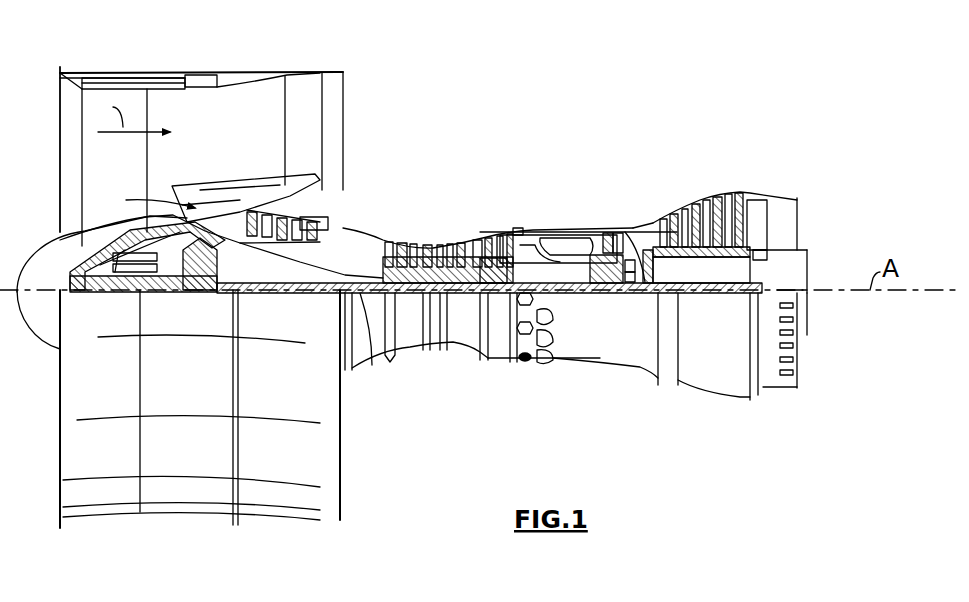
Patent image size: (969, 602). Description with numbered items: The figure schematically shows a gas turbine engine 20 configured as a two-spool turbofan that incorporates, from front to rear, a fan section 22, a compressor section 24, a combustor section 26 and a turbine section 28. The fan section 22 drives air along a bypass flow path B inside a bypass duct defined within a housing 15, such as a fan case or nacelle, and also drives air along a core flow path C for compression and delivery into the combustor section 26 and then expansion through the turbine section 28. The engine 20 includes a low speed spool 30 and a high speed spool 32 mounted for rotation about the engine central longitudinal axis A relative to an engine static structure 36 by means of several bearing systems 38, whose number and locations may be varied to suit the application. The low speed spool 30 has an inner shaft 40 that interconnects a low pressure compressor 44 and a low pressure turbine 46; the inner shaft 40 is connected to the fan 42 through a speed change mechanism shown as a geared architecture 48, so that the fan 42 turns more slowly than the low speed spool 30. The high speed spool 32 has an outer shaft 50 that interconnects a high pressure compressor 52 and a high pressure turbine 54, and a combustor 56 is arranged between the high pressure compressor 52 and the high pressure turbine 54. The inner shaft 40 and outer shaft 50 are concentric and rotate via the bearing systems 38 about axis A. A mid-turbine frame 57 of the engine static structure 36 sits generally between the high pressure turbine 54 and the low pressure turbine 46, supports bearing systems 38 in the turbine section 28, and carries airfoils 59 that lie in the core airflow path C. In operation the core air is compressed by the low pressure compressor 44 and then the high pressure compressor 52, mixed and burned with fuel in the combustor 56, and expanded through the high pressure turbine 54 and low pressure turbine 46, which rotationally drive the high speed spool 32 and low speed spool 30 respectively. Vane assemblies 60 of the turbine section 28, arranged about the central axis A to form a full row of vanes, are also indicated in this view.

The housing 15 is at (203, 75).
The gas turbine engine 20 is at (570, 100).
The fan section 22 is at (147, 66).
The compressor section 24 is at (382, 218).
The combustor section 26 is at (557, 208).
The turbine section 28 is at (688, 170).
The low speed spool 30 is at (467, 300).
The high speed spool 32 is at (500, 233).
The engine static structure 36 is at (500, 364).
The bearing systems 38 is at (313, 293).
The inner shaft 40 is at (363, 367).
The fan 42 is at (131, 172).
The low pressure compressor 44 is at (320, 180).
The low pressure turbine 46 is at (707, 197).
The geared architecture 48 is at (207, 293).
The outer shaft 50 is at (563, 293).
The high pressure compressor 52 is at (449, 238).
The high pressure turbine 54 is at (607, 225).
The combustor 56 is at (557, 247).
The mid-turbine frame 57 is at (643, 217).
The airfoils 59 is at (663, 263).
The vane assemblies 60 is at (650, 222).